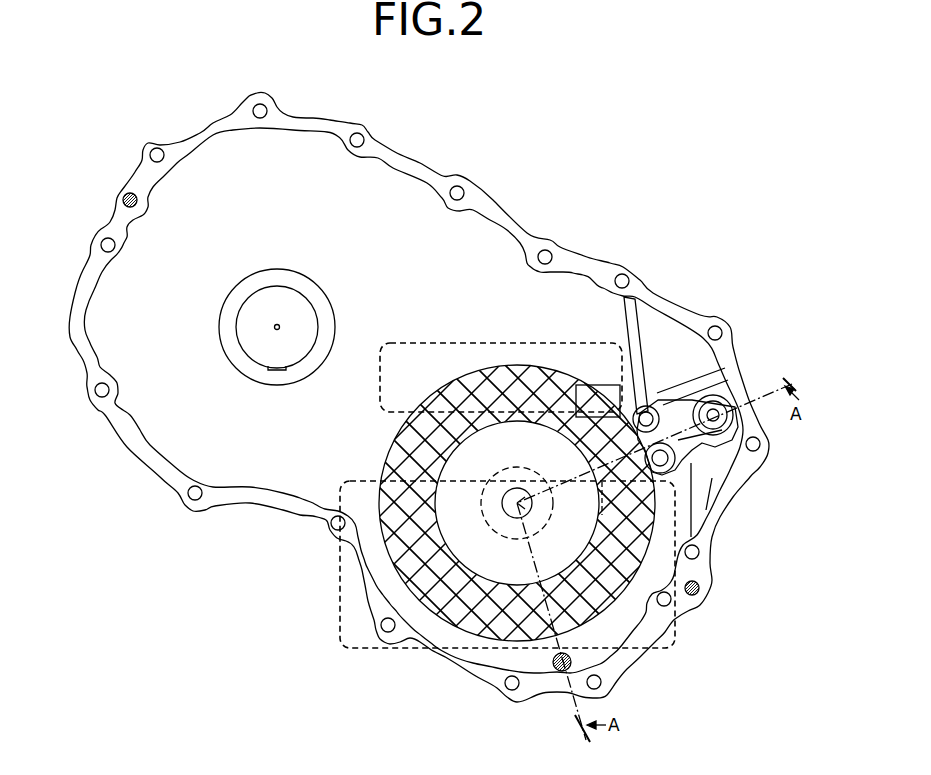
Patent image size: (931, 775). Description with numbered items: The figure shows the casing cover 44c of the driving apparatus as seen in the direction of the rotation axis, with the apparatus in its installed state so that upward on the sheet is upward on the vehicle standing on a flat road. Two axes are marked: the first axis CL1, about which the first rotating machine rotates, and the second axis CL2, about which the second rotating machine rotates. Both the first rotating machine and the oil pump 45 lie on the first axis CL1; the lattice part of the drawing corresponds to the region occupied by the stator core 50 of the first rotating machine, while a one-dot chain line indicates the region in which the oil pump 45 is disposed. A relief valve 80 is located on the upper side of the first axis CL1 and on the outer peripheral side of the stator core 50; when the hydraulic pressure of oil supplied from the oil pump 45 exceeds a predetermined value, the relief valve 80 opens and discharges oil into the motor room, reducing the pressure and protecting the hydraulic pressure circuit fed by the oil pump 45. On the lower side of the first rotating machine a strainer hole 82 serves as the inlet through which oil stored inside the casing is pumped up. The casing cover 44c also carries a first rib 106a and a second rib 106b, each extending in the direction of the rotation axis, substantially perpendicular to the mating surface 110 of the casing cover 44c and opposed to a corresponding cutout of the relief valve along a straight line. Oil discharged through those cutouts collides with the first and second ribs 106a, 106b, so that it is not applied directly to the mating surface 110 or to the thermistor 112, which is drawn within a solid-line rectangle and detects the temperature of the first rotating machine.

The casing cover 44c is at (419, 397).
The mating surface 110 is at (507, 225).
The thermistor 112 is at (620, 382).
The first rib 106a is at (663, 382).
The second rib 106b is at (703, 460).
The relief valve 80 is at (725, 379).
The oil pump 45 is at (627, 510).
The stator core 50 is at (450, 612).
The strainer hole 82 is at (562, 675).
The first axis CL1 is at (517, 503).
The second axis CL2 is at (277, 327).